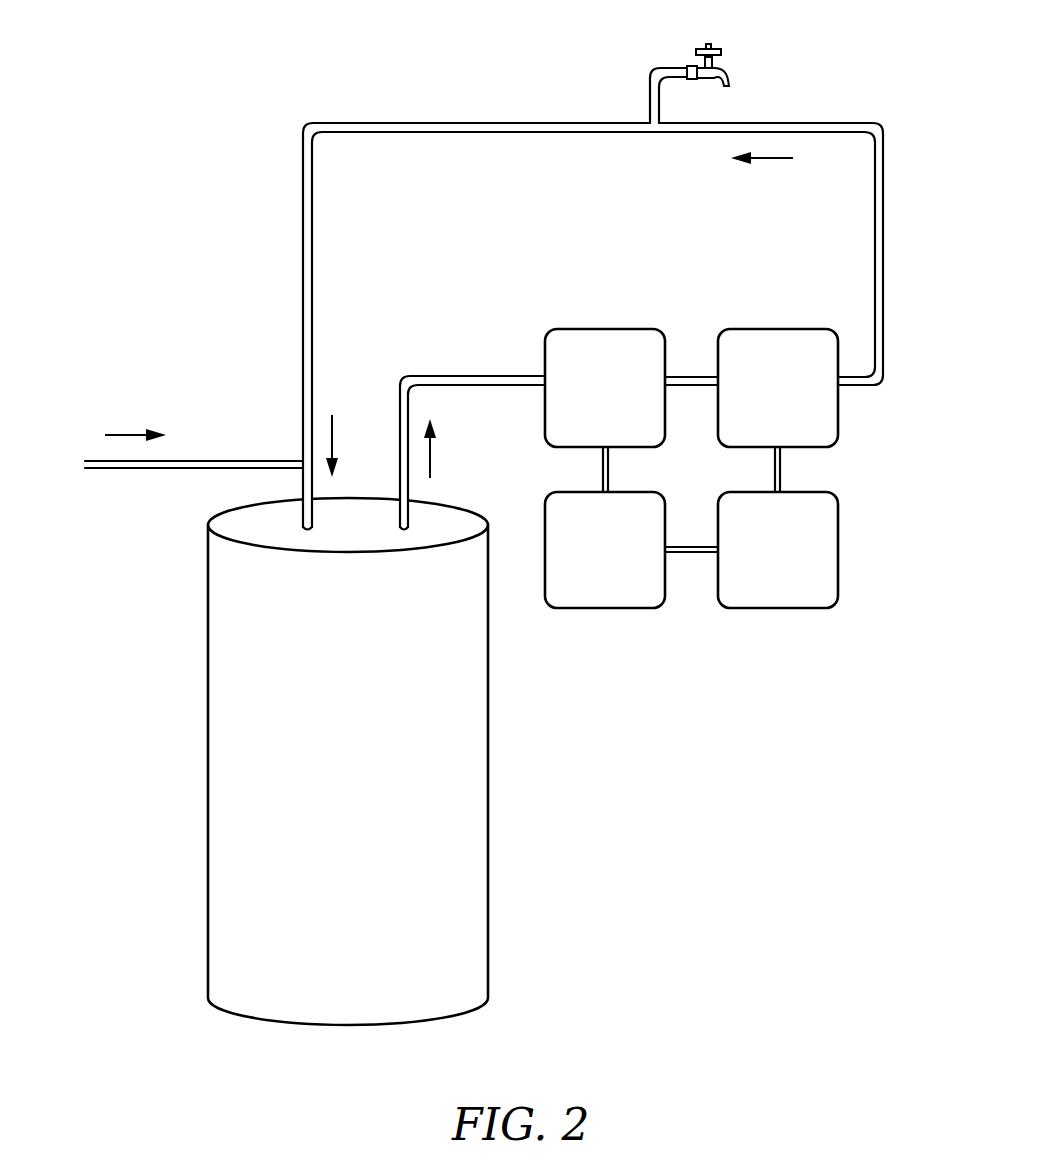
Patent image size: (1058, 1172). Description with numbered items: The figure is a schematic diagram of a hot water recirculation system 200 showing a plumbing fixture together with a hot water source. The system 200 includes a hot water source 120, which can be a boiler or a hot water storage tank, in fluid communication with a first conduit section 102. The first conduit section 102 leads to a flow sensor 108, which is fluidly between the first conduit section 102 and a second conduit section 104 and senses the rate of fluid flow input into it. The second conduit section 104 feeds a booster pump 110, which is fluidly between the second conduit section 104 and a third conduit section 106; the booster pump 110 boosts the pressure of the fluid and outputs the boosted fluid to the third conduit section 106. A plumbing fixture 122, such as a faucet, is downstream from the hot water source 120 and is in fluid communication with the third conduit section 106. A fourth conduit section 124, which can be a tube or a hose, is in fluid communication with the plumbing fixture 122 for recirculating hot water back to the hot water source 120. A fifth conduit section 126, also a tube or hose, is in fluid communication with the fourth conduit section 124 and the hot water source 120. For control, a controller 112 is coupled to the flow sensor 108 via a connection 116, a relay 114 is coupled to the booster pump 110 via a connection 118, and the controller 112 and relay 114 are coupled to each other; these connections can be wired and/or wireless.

The first conduit section 102 is at (458, 376).
The second conduit section 104 is at (695, 377).
The third conduit section 106 is at (883, 258).
The flow sensor 108 is at (583, 329).
The booster pump 110 is at (780, 329).
The controller 112 is at (620, 608).
The relay 114 is at (790, 608).
The connection 116 is at (608, 470).
The connection 118 is at (780, 468).
The hot water source 120 is at (488, 762).
The plumbing fixture 122 is at (687, 67).
The fourth conduit section 124 is at (432, 123).
The fifth conduit section 126 is at (200, 461).
The system 200 is at (753, 845).